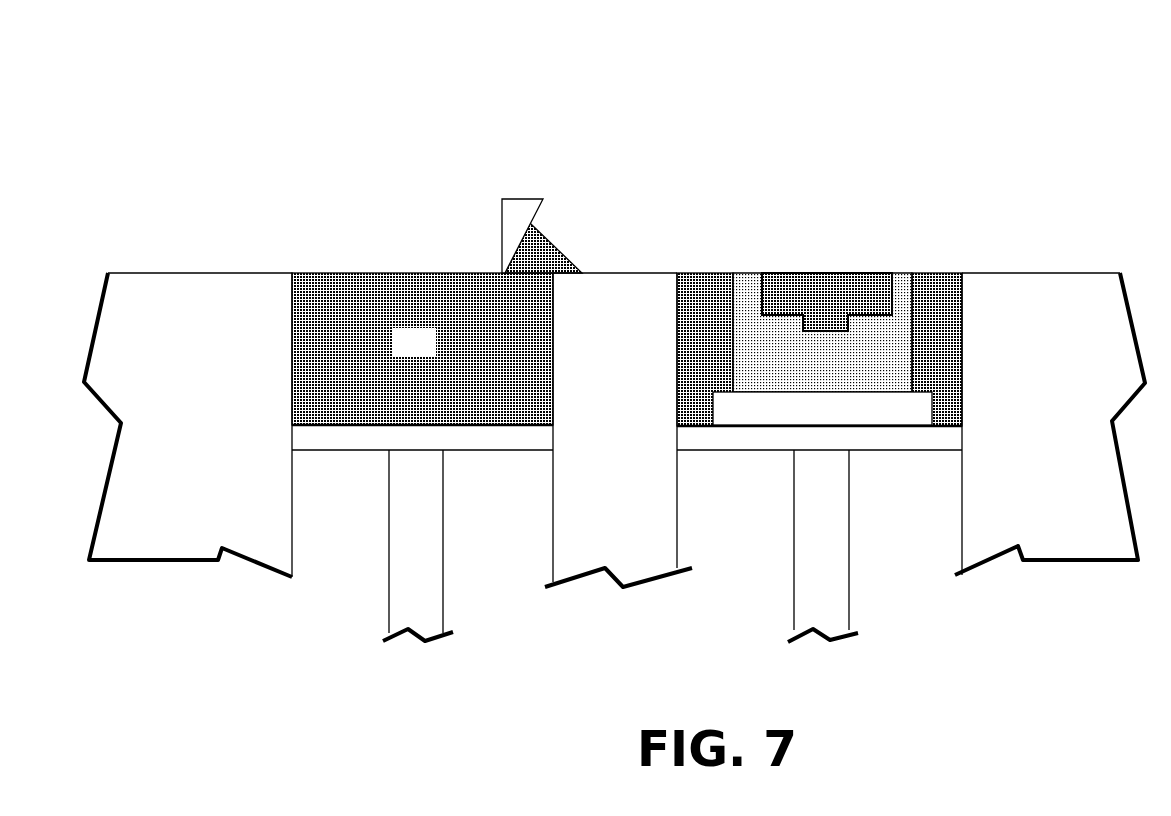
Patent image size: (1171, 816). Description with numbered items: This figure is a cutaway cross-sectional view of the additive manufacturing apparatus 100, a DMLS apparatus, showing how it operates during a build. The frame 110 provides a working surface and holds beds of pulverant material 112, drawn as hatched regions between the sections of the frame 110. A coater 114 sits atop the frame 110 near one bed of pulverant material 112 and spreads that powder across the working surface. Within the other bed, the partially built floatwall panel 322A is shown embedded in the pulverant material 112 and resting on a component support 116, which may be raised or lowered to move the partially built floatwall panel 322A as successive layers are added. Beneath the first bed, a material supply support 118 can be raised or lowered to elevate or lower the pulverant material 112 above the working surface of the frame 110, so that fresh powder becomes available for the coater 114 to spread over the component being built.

The additive manufacturing apparatus 100 is at (1022, 167).
The frame 110 is at (614, 430).
The pulverant material 112 is at (948, 283).
The coater 114 is at (516, 199).
The component support 116 is at (860, 426).
The material supply support 118 is at (398, 572).
The partially built floatwall panel 322A is at (778, 380).